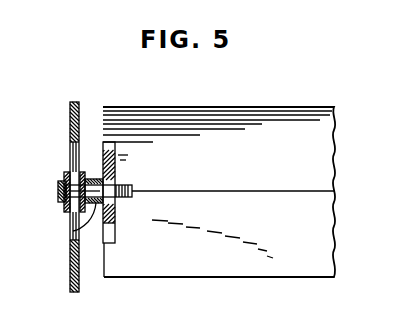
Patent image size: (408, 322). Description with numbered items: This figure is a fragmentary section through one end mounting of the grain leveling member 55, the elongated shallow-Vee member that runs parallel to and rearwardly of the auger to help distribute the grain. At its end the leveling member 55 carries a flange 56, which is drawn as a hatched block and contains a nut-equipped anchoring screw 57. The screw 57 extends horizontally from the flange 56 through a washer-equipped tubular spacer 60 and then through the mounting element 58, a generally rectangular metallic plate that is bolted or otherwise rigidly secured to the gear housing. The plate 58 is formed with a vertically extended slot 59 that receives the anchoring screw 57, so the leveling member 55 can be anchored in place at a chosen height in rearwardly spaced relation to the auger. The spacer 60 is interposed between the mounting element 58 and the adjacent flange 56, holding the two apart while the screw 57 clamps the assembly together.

The leveling member 55 is at (280, 108).
The flange 56 is at (117, 148).
The anchoring screw 57 is at (60, 188).
The mounting element 58 is at (69, 129).
The vertically extended slot 59 is at (73, 158).
The tubular spacer 60 is at (73, 231).